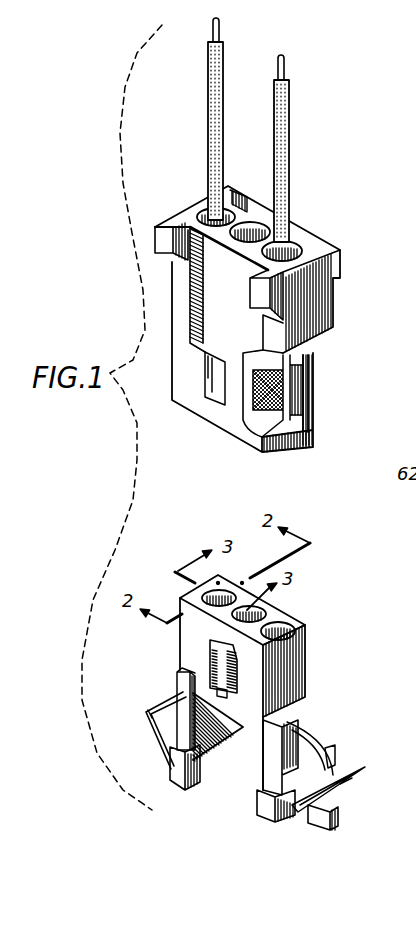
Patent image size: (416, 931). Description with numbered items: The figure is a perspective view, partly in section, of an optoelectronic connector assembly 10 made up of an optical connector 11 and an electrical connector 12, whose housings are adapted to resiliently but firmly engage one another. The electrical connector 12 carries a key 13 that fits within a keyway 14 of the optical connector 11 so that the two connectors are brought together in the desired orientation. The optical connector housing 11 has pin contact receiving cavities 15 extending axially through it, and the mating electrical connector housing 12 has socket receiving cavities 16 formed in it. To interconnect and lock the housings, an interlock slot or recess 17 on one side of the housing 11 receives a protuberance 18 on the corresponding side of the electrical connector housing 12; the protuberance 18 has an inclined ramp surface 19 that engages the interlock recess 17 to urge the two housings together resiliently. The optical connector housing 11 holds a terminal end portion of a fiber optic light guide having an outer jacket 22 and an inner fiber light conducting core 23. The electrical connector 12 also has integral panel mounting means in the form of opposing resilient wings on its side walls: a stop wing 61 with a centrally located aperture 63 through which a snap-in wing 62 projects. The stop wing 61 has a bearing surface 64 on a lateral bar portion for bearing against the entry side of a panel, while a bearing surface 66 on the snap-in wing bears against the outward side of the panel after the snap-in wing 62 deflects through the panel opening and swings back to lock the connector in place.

The optoelectronic connector assembly 10 is at (343, 498).
The optical connector housing 11 is at (327, 251).
The electrical connector housing 12 is at (188, 646).
The key 13 is at (307, 677).
The keyway 14 is at (268, 413).
The pin contact receiving cavities 15 is at (292, 243).
The socket receiving cavities 16 is at (283, 622).
The interlock slot or recess 17 is at (220, 410).
The protuberance 18 is at (227, 680).
The inclined ramp surface 19 is at (220, 697).
The outer jacket 22 is at (277, 152).
The inner fiber light conducting core 23 is at (300, 388).
The stop wing 61 is at (160, 748).
The snap-in wing 62 is at (335, 828).
The aperture 63 is at (165, 716).
The bearing surface 64 is at (175, 702).
The bearing surface 66 is at (333, 752).